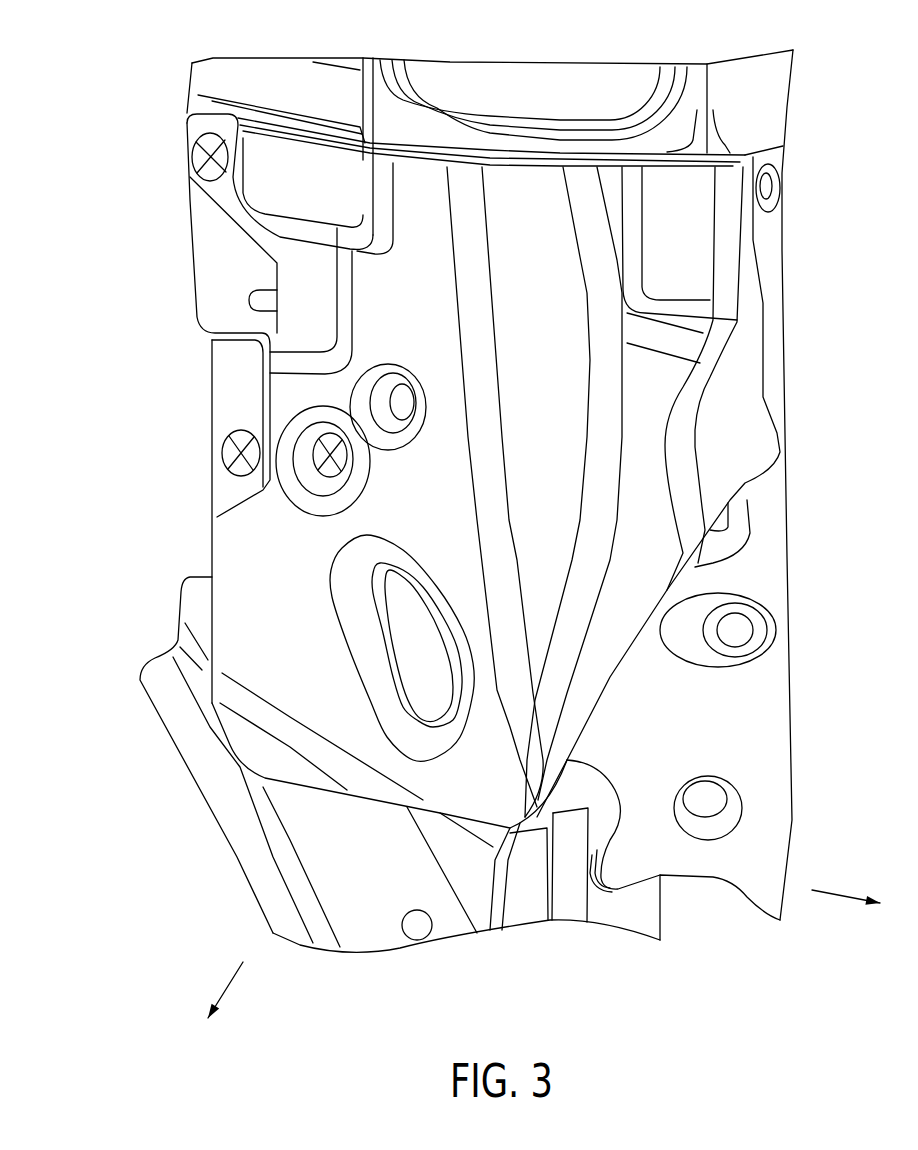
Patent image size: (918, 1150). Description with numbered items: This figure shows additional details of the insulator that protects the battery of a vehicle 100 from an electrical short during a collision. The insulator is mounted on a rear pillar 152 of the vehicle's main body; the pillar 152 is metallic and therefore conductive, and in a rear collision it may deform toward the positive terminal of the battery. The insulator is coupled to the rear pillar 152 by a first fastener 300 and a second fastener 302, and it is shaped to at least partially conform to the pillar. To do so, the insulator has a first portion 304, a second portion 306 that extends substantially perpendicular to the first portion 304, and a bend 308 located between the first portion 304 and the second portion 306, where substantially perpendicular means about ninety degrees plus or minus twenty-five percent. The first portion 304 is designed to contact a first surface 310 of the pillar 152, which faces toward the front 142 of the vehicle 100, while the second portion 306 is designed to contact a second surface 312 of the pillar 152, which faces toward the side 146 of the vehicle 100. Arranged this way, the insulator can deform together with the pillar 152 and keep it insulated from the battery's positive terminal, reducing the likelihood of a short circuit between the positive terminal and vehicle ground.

The vehicle 100 is at (110, 410).
The front 142 is at (235, 977).
The side 146 is at (837, 895).
The pillar 152 is at (217, 310).
The first fastener 300 is at (190, 158).
The second fastener 302 is at (313, 457).
The first portion 304 is at (233, 590).
The second portion 306 is at (747, 475).
The bend 308 is at (420, 177).
The first surface 310 is at (217, 255).
The second surface 312 is at (767, 243).